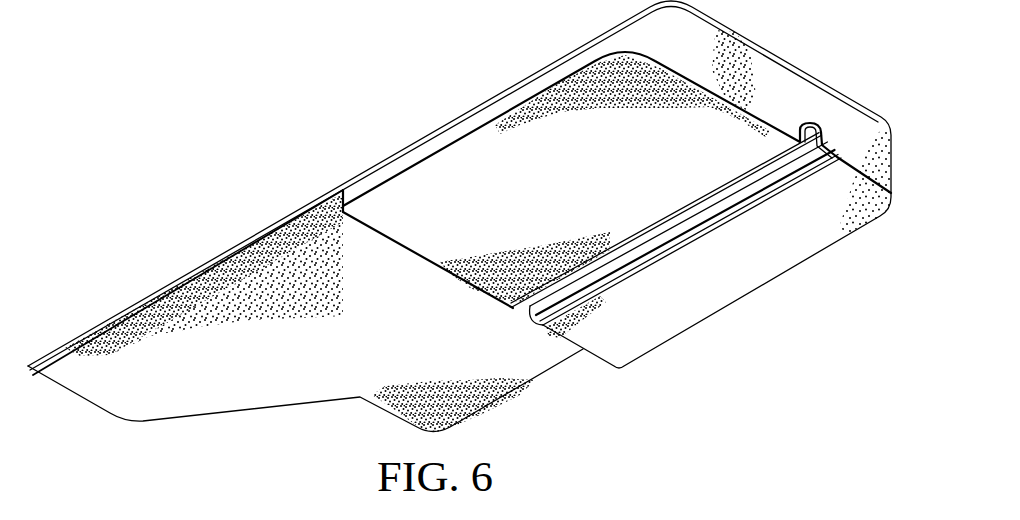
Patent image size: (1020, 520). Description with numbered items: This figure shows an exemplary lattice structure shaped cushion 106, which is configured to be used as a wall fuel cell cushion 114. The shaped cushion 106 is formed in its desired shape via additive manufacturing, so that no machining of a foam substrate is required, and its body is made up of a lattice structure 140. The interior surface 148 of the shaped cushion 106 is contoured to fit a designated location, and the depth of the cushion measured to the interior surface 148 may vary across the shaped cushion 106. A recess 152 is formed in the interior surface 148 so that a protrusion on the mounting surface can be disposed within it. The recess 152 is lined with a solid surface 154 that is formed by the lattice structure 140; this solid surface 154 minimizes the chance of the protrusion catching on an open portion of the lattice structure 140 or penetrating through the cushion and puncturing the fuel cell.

The shaped cushion 106 is at (459, 216).
The wall fuel cell cushion 114 is at (286, 84).
The lattice structure 140 is at (799, 88).
The interior surface 148 is at (255, 397).
The recess 152 is at (741, 213).
The solid surface 154 is at (638, 252).